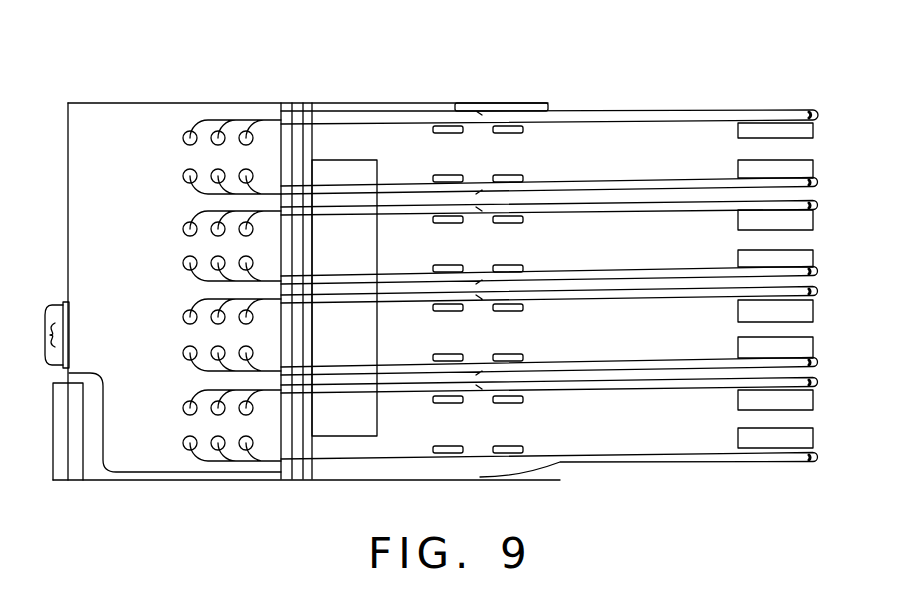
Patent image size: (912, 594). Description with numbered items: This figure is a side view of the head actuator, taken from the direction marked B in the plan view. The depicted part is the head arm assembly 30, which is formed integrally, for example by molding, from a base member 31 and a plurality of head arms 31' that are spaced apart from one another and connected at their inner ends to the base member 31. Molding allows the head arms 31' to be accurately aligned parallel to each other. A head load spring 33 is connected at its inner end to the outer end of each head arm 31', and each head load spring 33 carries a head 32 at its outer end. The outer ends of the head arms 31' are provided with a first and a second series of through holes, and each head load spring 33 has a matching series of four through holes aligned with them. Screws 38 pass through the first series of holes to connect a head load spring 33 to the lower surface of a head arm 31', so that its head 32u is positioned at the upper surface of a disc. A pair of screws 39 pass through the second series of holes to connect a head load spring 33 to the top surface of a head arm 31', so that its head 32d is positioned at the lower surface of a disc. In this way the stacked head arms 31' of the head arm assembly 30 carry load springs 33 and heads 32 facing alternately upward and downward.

The head arm assembly 30 is at (157, 100).
The base member 31 is at (51, 251).
The head arm 31' is at (414, 247).
The head 32 is at (767, 3).
The head positioned on the upper surface of a disc 32u is at (738, 128).
The head positioned on the lower surface of a disc 32d is at (757, 137).
The head load spring 33 is at (635, 111).
The screw 38 is at (448, 126).
The screw 39 is at (445, 175).